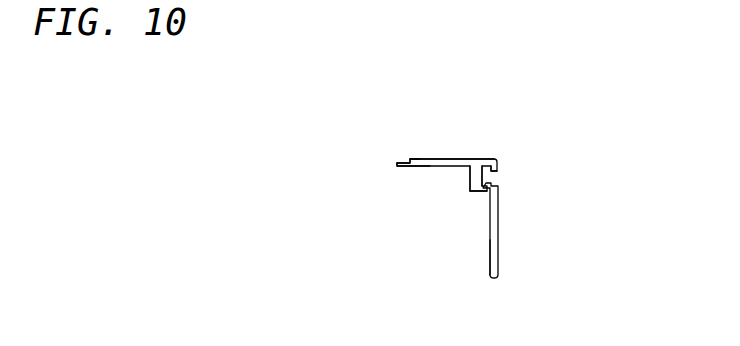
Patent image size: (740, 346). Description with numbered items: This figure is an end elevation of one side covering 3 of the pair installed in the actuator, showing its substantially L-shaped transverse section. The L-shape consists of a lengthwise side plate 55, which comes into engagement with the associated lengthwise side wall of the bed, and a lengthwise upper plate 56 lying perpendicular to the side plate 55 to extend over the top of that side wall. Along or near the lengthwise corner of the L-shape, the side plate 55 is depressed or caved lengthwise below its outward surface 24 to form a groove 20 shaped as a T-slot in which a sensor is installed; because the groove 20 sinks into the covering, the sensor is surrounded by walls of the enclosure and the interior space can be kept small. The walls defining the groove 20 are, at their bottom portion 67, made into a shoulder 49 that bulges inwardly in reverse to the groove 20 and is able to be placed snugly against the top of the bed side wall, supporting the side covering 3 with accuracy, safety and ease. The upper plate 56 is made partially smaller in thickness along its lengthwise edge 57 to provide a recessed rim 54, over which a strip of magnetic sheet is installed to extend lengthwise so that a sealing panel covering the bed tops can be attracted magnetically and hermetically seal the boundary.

The side covering 3 is at (471, 156).
The groove 20 is at (490, 178).
The outward surface 24 is at (500, 235).
The shoulder 49 is at (478, 194).
The recessed rim 54 is at (407, 160).
The side plate 55 is at (490, 246).
The upper plate 56 is at (437, 159).
The lengthwise edge 57 is at (398, 168).
The bottom portion 67 is at (471, 181).